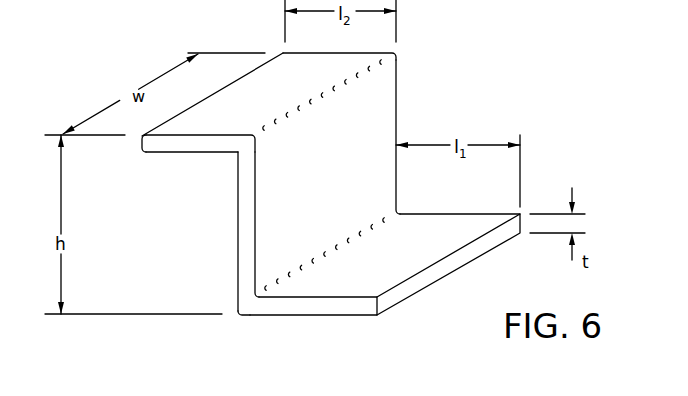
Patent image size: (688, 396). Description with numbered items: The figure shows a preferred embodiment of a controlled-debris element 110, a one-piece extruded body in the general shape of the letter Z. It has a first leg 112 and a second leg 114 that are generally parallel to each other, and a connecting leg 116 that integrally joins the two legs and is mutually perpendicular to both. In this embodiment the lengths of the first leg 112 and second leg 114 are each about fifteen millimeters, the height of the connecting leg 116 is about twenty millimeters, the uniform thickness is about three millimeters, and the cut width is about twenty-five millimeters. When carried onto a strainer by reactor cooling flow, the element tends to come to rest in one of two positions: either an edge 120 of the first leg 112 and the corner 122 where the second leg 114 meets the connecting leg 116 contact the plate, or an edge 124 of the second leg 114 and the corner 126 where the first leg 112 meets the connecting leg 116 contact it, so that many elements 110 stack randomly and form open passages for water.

The controlled-debris element 110 is at (312, 210).
The first leg 112 is at (407, 285).
The second leg 114 is at (185, 143).
The connecting leg 116 is at (252, 242).
The edge of the first leg 120 is at (422, 268).
The corner where the second leg meets the connecting leg 122 is at (315, 105).
The edge of the second leg 124 is at (138, 152).
The corner where the first leg meets the connecting leg 126 is at (237, 320).